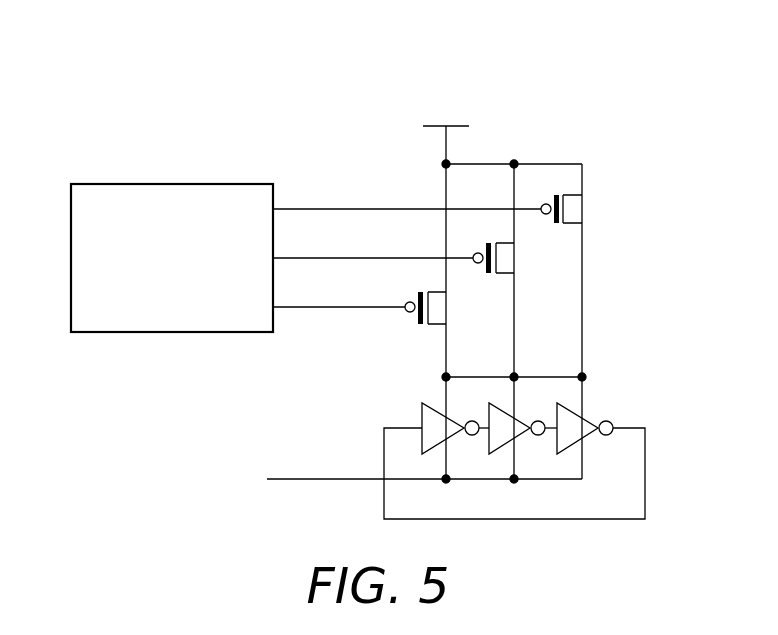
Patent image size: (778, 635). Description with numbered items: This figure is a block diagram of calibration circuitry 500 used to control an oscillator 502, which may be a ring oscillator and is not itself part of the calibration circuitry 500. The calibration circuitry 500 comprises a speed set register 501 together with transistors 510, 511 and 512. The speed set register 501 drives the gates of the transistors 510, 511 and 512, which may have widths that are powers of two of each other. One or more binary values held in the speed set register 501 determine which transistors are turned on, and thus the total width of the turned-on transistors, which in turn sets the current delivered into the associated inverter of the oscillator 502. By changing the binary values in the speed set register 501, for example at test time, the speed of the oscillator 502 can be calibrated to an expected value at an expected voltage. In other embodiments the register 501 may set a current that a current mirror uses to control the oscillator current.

The calibration circuitry 500 is at (578, 68).
The speed set register 501 is at (92, 184).
The oscillator 502 is at (617, 398).
The transistor 510 is at (434, 307).
The transistor 511 is at (502, 258).
The transistor 512 is at (570, 209).